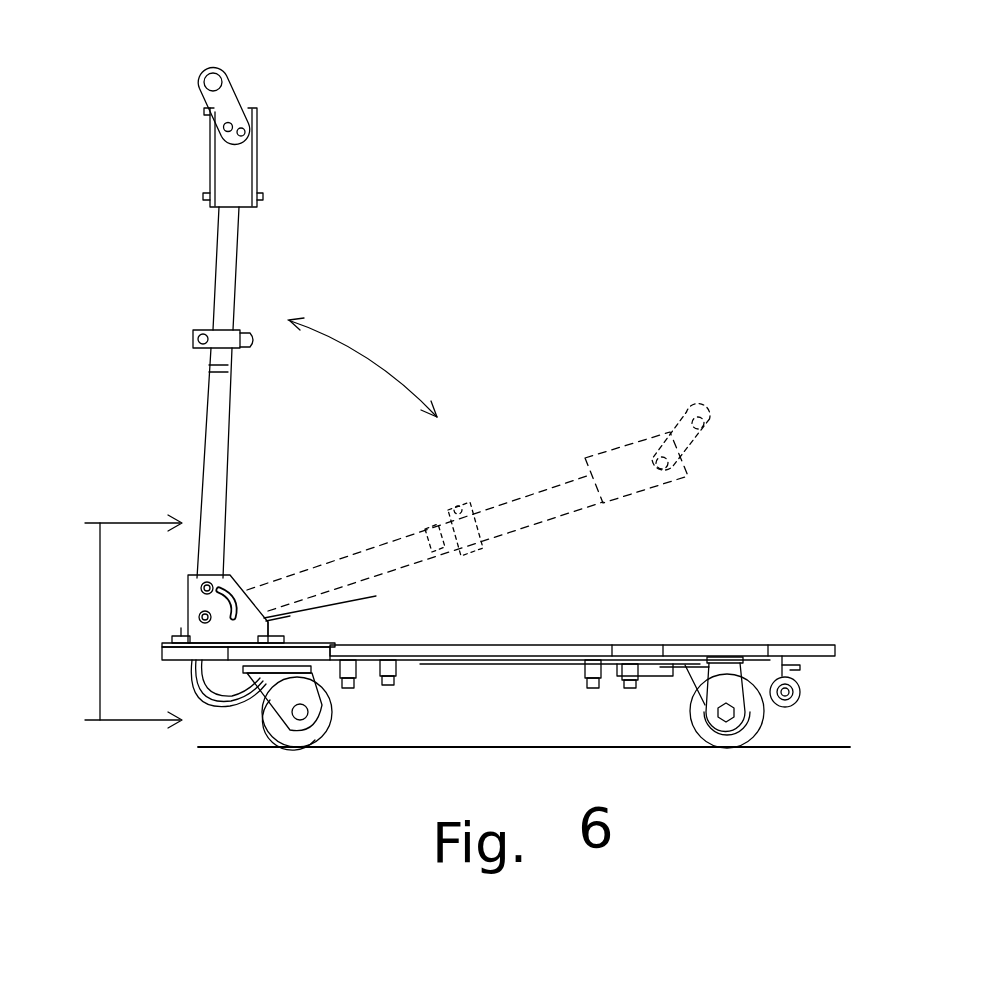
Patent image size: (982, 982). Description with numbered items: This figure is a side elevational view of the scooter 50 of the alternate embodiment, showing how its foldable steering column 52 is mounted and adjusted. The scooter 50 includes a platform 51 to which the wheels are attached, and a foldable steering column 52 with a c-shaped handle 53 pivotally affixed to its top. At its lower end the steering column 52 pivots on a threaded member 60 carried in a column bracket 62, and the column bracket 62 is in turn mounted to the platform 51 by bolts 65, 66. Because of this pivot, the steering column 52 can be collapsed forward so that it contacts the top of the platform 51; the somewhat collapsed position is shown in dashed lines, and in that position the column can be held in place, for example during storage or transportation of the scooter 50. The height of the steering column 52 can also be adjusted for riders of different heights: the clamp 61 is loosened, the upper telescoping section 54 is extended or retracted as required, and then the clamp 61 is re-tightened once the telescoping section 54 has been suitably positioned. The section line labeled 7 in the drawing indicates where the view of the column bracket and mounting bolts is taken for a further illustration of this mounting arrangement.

The section line 7- 7 is at (122, 620).
The scooter 50 is at (518, 296).
The platform 51 is at (518, 645).
The foldable steering column 52 is at (198, 282).
The c-shaped handle 53 is at (233, 87).
The upper telescoping section 54 is at (240, 242).
The threaded member 60 is at (188, 596).
The clamp 61 is at (240, 330).
The column bracket 62 is at (340, 602).
The bolt 65 is at (278, 637).
The bolt 66 is at (176, 636).